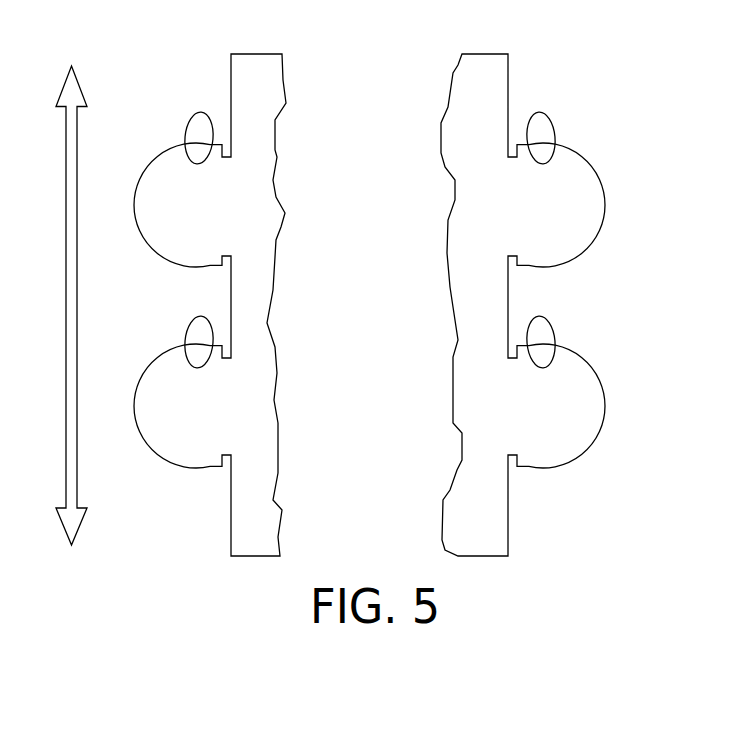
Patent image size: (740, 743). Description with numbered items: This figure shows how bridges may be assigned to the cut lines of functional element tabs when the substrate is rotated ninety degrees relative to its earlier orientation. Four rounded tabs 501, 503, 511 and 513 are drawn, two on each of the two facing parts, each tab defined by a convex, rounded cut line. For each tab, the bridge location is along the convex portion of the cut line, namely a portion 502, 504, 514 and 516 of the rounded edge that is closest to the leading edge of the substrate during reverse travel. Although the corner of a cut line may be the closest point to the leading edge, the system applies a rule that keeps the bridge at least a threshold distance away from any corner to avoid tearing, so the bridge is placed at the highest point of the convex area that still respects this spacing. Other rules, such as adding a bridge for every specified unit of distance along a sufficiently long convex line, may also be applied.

The tab 501 is at (190, 203).
The portion of the rounded edge 502 is at (188, 119).
The tab 503 is at (190, 407).
The portion of the rounded edge 504 is at (188, 323).
The tab 511 is at (552, 205).
The tab 513 is at (552, 407).
The portion of the rounded edge 514 is at (552, 119).
The portion of the rounded edge 516 is at (552, 323).